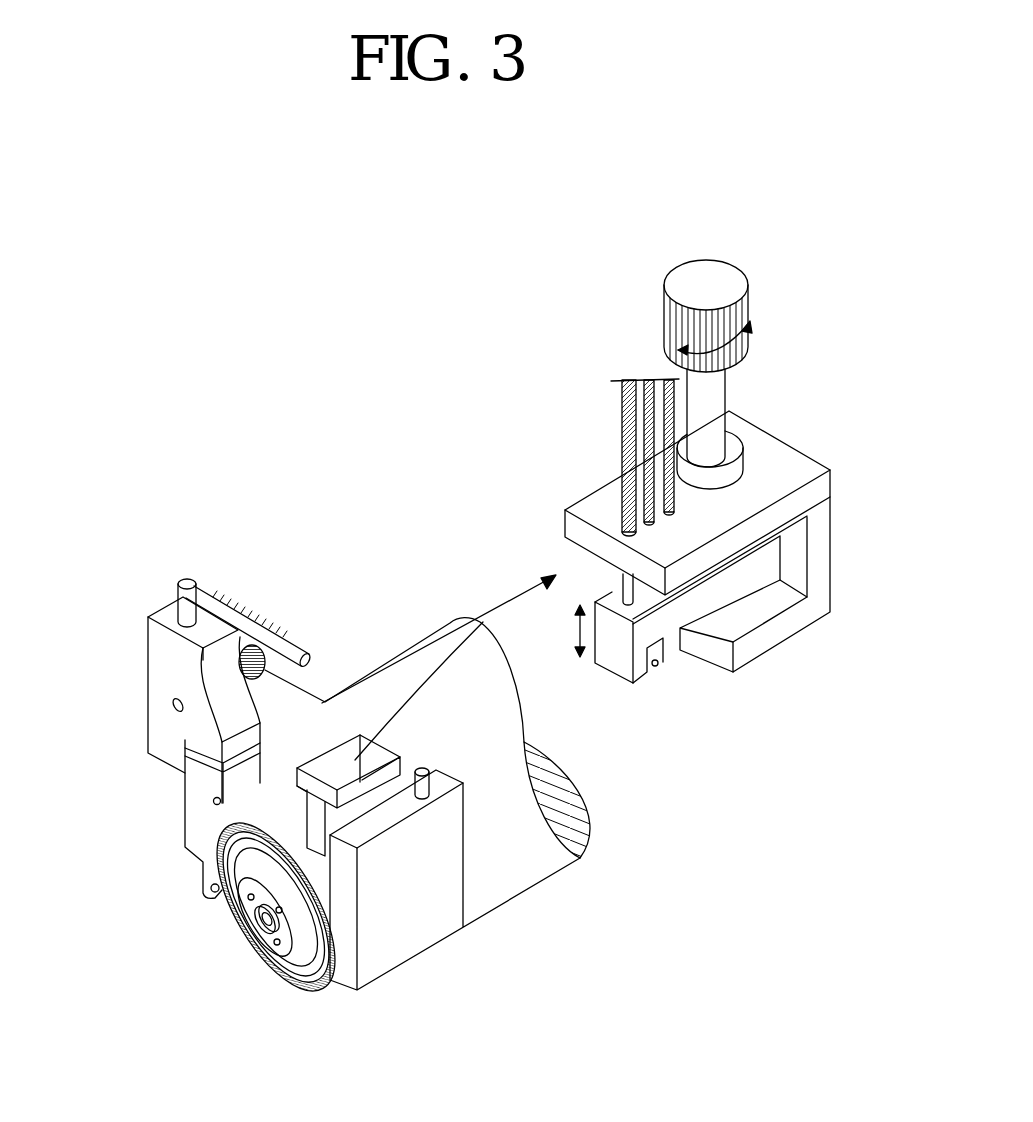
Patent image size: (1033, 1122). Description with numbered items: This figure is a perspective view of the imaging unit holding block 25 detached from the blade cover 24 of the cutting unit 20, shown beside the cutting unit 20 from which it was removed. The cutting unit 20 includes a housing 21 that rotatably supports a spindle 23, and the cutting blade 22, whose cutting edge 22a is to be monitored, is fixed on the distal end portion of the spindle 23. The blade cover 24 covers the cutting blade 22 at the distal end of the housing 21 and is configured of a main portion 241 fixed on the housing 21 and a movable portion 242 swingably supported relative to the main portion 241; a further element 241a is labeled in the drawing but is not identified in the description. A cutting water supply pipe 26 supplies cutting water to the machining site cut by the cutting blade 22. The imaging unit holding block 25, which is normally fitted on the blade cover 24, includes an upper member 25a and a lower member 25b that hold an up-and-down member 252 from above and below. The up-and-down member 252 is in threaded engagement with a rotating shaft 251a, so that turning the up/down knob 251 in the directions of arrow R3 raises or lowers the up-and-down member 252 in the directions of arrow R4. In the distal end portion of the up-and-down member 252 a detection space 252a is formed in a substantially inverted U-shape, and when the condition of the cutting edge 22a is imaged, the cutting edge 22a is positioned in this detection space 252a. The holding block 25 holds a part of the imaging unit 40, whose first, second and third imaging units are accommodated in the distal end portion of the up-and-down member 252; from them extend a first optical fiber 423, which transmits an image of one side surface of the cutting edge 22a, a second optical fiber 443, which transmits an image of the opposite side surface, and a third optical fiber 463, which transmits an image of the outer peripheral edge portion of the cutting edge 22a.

The cutting unit 20 is at (158, 602).
The housing 21 is at (432, 648).
The cutting blade 22 is at (295, 924).
The cutting edge 22a is at (338, 985).
The spindle 23 is at (260, 933).
The blade cover 24 is at (151, 767).
The main portion 241 is at (268, 700).
The follower block 241a is at (338, 707).
The movable portion 242 is at (171, 799).
The imaging unit holding block 25 is at (751, 541).
The upper member 25a is at (799, 464).
The lower member 25b is at (823, 545).
The up/down knob 251 is at (718, 278).
The rotating shaft 251a is at (718, 403).
The up-and-down member 252 is at (660, 659).
The detection space 252a is at (660, 668).
The cutting water supply pipe 26 is at (253, 643).
The imaging unit 40 is at (591, 492).
The first optical fiber 423 is at (620, 438).
The second optical fiber 443 is at (656, 378).
The third optical fiber 463 is at (642, 406).
The arrow R3 is at (752, 345).
The arrow R4 is at (566, 631).